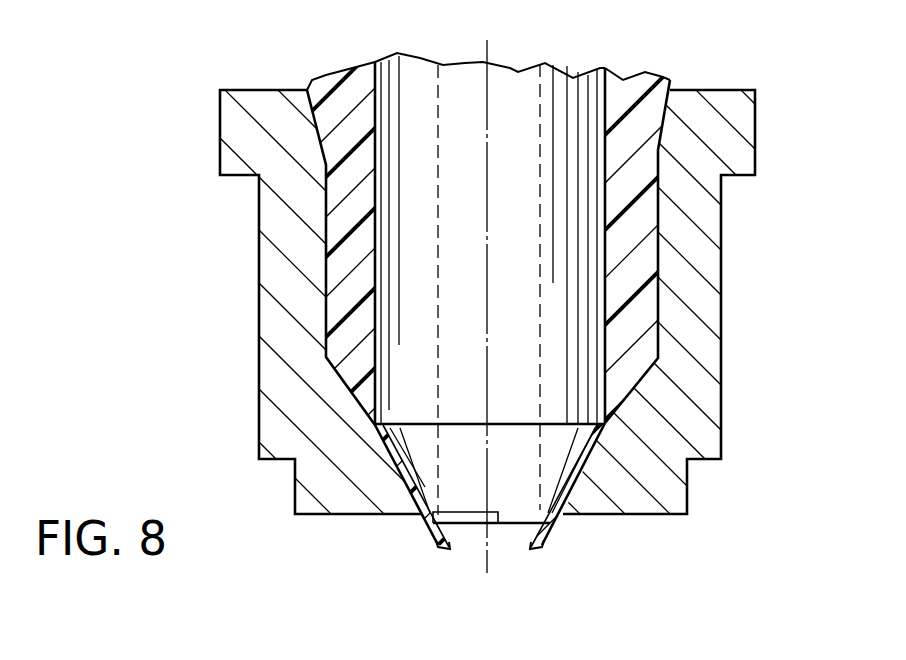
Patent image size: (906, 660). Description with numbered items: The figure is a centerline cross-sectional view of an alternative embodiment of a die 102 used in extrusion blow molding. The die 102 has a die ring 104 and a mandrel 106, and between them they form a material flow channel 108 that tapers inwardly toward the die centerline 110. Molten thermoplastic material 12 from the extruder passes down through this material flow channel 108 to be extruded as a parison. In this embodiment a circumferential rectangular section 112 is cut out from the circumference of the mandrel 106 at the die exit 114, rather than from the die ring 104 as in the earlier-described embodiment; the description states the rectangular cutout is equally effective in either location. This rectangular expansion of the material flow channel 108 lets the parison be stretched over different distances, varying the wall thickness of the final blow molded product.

The molten thermoplastic material 12 is at (352, 57).
The die 102 is at (226, 331).
The die ring 104 is at (728, 272).
The mandrel 106 is at (523, 70).
The material flow channel 108 is at (402, 472).
The die centerline 110 is at (483, 92).
The circumferential rectangular section 112 is at (469, 532).
The die exit 114 is at (420, 522).